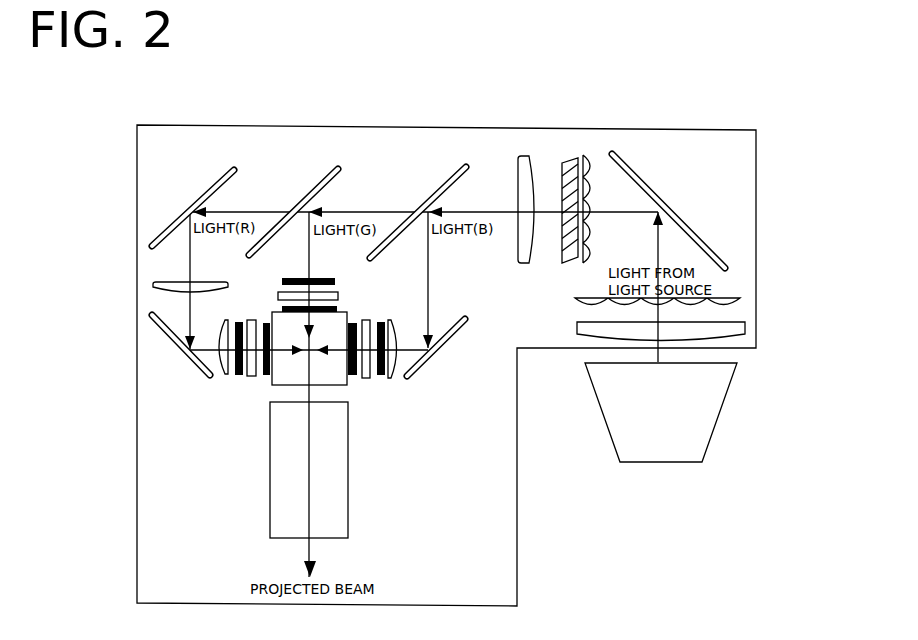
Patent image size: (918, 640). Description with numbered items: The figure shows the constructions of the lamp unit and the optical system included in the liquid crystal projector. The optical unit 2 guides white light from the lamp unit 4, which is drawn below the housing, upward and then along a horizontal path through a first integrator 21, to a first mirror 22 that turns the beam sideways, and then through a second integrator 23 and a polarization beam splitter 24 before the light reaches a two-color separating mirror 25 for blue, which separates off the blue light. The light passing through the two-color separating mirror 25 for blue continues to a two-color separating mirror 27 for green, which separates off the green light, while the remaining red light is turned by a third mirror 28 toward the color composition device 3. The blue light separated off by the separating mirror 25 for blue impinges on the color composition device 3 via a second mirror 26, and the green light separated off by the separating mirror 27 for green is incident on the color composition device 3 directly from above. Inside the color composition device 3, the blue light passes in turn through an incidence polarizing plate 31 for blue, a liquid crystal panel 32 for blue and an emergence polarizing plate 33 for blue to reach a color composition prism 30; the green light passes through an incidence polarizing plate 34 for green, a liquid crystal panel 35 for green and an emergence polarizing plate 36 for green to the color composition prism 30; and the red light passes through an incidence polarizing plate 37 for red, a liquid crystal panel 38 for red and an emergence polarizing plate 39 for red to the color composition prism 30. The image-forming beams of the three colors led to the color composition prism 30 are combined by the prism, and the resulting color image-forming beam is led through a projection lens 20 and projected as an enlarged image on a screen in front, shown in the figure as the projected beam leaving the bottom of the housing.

The optical unit 2 is at (720, 130).
The color composition device 3 is at (322, 404).
The lamp unit 4 is at (643, 450).
The projection lens 20 is at (340, 507).
The first integrator 21 is at (740, 300).
The first mirror 22 is at (645, 182).
The second integrator 23 is at (585, 158).
The polarization beam splitter 24 is at (568, 160).
The two-color separating mirror for blue 25 is at (453, 168).
The second mirror 26 is at (462, 319).
The two-color separating mirror for green 27 is at (323, 167).
The third mirror 28 is at (219, 167).
The color composition prism 30 is at (332, 373).
The incidence polarizing plate for blue 31 is at (383, 375).
The liquid crystal panel for blue 32 is at (367, 378).
The emergence polarizing plate for blue 33 is at (352, 378).
The incidence polarizing plate for green 34 is at (337, 283).
The liquid crystal panel for green 35 is at (338, 297).
The emergence polarizing plate for green 36 is at (338, 310).
The incidence polarizing plate for red 37 is at (238, 378).
The liquid crystal panel for red 38 is at (251, 378).
The emergence polarizing plate for red 39 is at (267, 378).